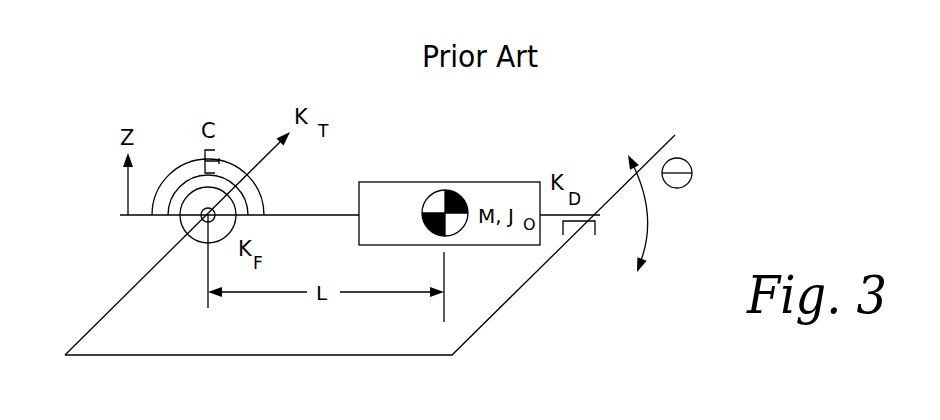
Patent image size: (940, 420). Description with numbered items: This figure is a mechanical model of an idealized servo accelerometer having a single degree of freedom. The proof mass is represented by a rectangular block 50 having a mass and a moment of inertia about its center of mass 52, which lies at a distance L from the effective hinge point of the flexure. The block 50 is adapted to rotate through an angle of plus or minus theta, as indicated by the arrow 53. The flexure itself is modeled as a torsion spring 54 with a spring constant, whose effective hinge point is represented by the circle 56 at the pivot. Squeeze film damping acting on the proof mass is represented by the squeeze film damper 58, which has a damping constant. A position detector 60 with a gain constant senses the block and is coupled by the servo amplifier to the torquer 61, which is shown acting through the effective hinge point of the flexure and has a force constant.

The rectangular block 50 is at (492, 182).
The center of mass 52 is at (437, 205).
The arrow 53 is at (647, 233).
The torsion spring 54 is at (245, 222).
The circle 56 is at (183, 220).
The squeeze film damper 58 is at (191, 154).
The position detector 60 is at (598, 198).
The torquer 61 is at (503, 308).